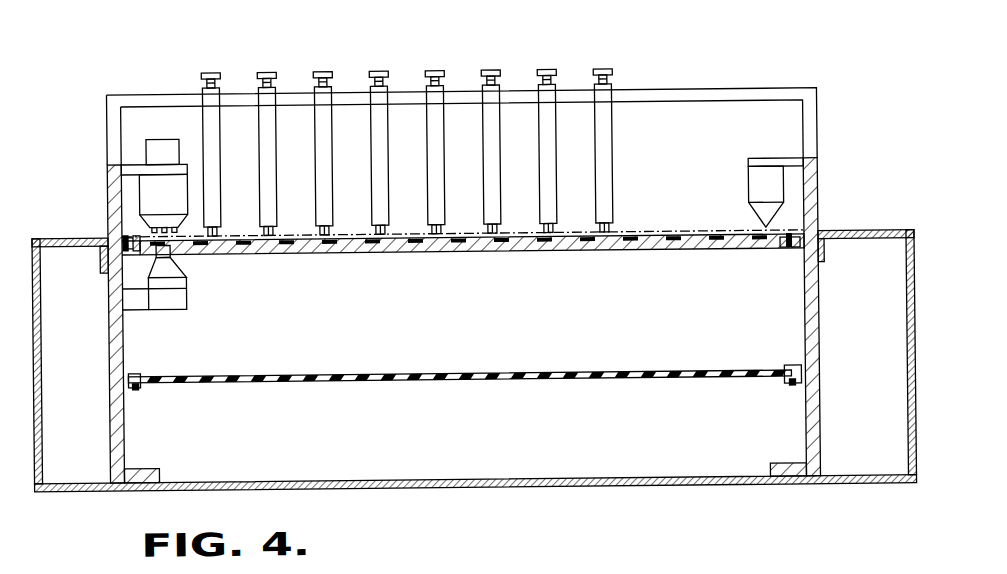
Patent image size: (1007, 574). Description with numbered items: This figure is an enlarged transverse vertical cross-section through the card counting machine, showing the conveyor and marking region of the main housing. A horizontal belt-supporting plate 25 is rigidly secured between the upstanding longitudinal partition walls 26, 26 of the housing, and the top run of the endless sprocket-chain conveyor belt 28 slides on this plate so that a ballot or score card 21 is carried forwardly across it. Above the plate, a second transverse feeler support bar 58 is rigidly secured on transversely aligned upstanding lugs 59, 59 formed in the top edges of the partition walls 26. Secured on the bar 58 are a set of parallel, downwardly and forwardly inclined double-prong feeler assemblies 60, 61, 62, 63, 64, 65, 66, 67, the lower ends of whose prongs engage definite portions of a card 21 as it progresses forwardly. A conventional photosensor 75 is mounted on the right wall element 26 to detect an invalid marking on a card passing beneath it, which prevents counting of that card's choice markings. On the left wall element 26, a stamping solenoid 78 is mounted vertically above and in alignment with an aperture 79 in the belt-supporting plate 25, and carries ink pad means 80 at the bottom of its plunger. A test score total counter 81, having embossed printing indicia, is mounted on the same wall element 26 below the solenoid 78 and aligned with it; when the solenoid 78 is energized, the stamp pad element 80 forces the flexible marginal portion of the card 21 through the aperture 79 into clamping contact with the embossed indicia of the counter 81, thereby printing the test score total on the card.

The ballot or score card 21 is at (358, 234).
The belt-supporting plate 25 is at (535, 259).
The partition wall 26 is at (108, 323).
The belt 28 is at (633, 378).
The second transverse feeler support bar 58 is at (400, 99).
The upstanding lug 59 is at (108, 132).
The double-prong feeler assembly 60 is at (217, 164).
The double-prong feeler assembly 61 is at (273, 164).
The double-prong feeler assembly 62 is at (329, 164).
The double-prong feeler assembly 63 is at (385, 164).
The double-prong feeler assembly 64 is at (441, 164).
The double-prong feeler assembly 65 is at (497, 164).
The double-prong feeler assembly 66 is at (553, 164).
The double-prong feeler assembly 67 is at (611, 164).
The photosensor 75 is at (758, 193).
The stamping solenoid 78 is at (177, 193).
The aperture 79 is at (178, 249).
The ink pad means 80 is at (130, 241).
The test score total counter 81 is at (168, 283).